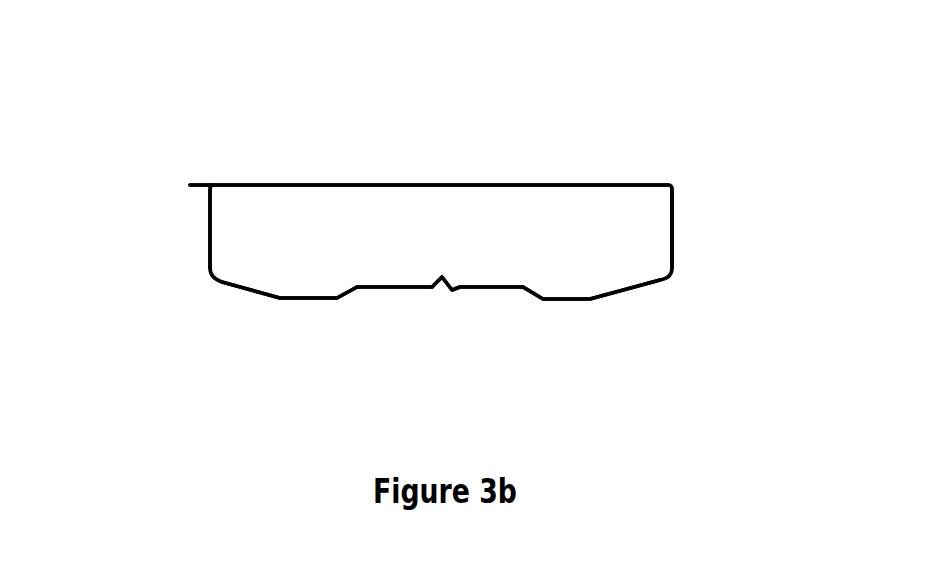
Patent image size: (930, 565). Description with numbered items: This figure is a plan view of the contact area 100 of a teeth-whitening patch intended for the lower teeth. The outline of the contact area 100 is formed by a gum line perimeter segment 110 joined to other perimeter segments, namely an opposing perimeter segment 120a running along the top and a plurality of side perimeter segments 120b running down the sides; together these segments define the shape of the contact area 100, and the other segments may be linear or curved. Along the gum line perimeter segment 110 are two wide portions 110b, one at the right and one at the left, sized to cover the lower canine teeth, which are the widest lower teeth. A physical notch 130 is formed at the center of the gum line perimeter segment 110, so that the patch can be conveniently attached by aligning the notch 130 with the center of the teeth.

The contact area 100 is at (178, 146).
The gum line perimeter segment 110 is at (372, 288).
The wide portions 110b is at (325, 300).
The opposing perimeter segment 120a is at (476, 185).
The side perimeter segments 120b is at (200, 187).
The physical notch 130 is at (442, 285).